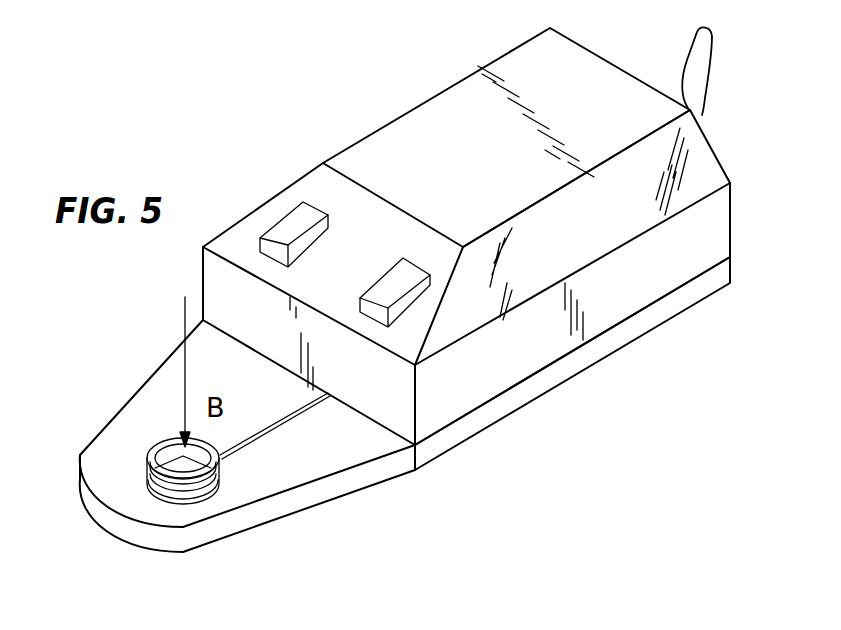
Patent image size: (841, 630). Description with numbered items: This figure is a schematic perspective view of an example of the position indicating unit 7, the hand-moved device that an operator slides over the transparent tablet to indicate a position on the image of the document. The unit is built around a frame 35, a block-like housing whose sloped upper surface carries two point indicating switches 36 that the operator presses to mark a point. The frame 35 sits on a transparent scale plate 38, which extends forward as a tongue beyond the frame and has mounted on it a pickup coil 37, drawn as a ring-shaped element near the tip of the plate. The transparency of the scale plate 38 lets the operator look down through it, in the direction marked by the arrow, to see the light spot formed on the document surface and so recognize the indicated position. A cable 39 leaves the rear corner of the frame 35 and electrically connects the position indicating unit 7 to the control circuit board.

The position indicating unit 7 is at (533, 420).
The frame 35 is at (437, 102).
The point indicating switches 36 is at (308, 209).
The pickup coil 37 is at (212, 497).
The transparent scale plate 38 is at (367, 480).
The cable 39 is at (691, 58).